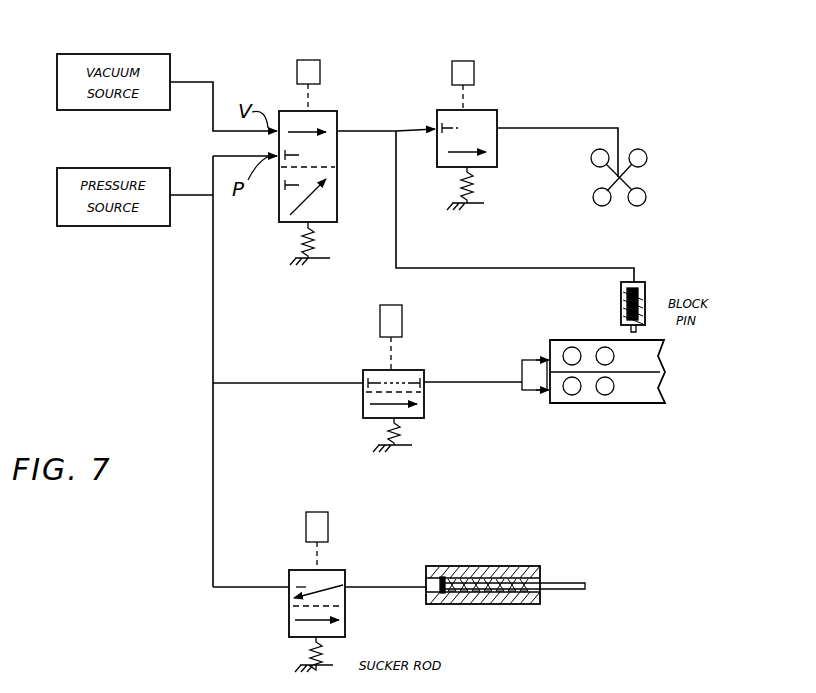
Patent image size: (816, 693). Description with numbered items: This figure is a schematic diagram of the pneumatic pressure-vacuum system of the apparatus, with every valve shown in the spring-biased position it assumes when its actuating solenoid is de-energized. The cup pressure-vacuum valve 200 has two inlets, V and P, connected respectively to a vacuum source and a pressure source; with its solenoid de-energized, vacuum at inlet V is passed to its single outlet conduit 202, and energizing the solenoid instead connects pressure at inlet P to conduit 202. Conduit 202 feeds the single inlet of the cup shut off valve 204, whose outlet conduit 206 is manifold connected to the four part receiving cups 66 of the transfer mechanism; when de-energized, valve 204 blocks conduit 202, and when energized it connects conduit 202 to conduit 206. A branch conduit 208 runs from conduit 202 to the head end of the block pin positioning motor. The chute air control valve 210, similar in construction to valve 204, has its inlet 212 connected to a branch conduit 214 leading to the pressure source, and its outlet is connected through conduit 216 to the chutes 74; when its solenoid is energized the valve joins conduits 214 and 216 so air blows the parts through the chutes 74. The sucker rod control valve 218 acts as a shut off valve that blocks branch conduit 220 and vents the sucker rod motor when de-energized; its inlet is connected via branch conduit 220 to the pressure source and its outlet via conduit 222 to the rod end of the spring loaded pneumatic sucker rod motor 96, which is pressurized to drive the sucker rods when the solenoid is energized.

The cup pressure-vacuum valve 200 is at (322, 111).
The outlet conduit 202 is at (392, 124).
The cup shut off valve 204 is at (497, 110).
The outlet conduit 206 is at (564, 128).
The part receiving cups 66 is at (652, 185).
The branch conduit 208 is at (520, 268).
The chute air control valve 210 is at (425, 370).
The inlet 212 is at (363, 370).
The branch conduit 214 is at (283, 383).
The conduit 216 is at (488, 383).
The chutes 74 is at (624, 396).
The sucker rod control valve 218 is at (345, 576).
The branch conduit 220 is at (264, 587).
The conduit 222 is at (386, 587).
The pneumatic motor 96 is at (499, 566).